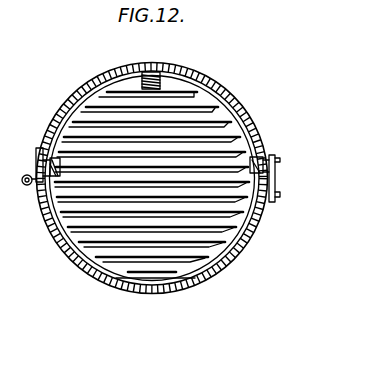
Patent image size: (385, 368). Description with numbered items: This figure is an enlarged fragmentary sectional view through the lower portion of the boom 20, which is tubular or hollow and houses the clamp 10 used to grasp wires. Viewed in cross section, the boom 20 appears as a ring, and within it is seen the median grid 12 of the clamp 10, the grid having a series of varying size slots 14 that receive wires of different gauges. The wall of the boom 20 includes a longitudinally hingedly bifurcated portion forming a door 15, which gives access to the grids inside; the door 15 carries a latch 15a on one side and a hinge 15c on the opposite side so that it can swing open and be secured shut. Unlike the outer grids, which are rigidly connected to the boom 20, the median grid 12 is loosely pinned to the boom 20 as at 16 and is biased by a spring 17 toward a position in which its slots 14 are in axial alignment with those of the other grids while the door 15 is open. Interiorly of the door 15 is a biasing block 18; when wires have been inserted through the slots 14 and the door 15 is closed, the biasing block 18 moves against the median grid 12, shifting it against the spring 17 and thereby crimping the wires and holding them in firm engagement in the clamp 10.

The clamp 10 is at (104, 76).
The median grid 12 is at (232, 241).
The slots 14 is at (216, 107).
The door 15 is at (97, 282).
The latch 15a is at (1, 154).
The hinge 15c is at (26, 186).
The pin 16 is at (43, 143).
The spring 17 is at (154, 73).
The biasing block 18 is at (162, 279).
The boom 20 is at (260, 111).